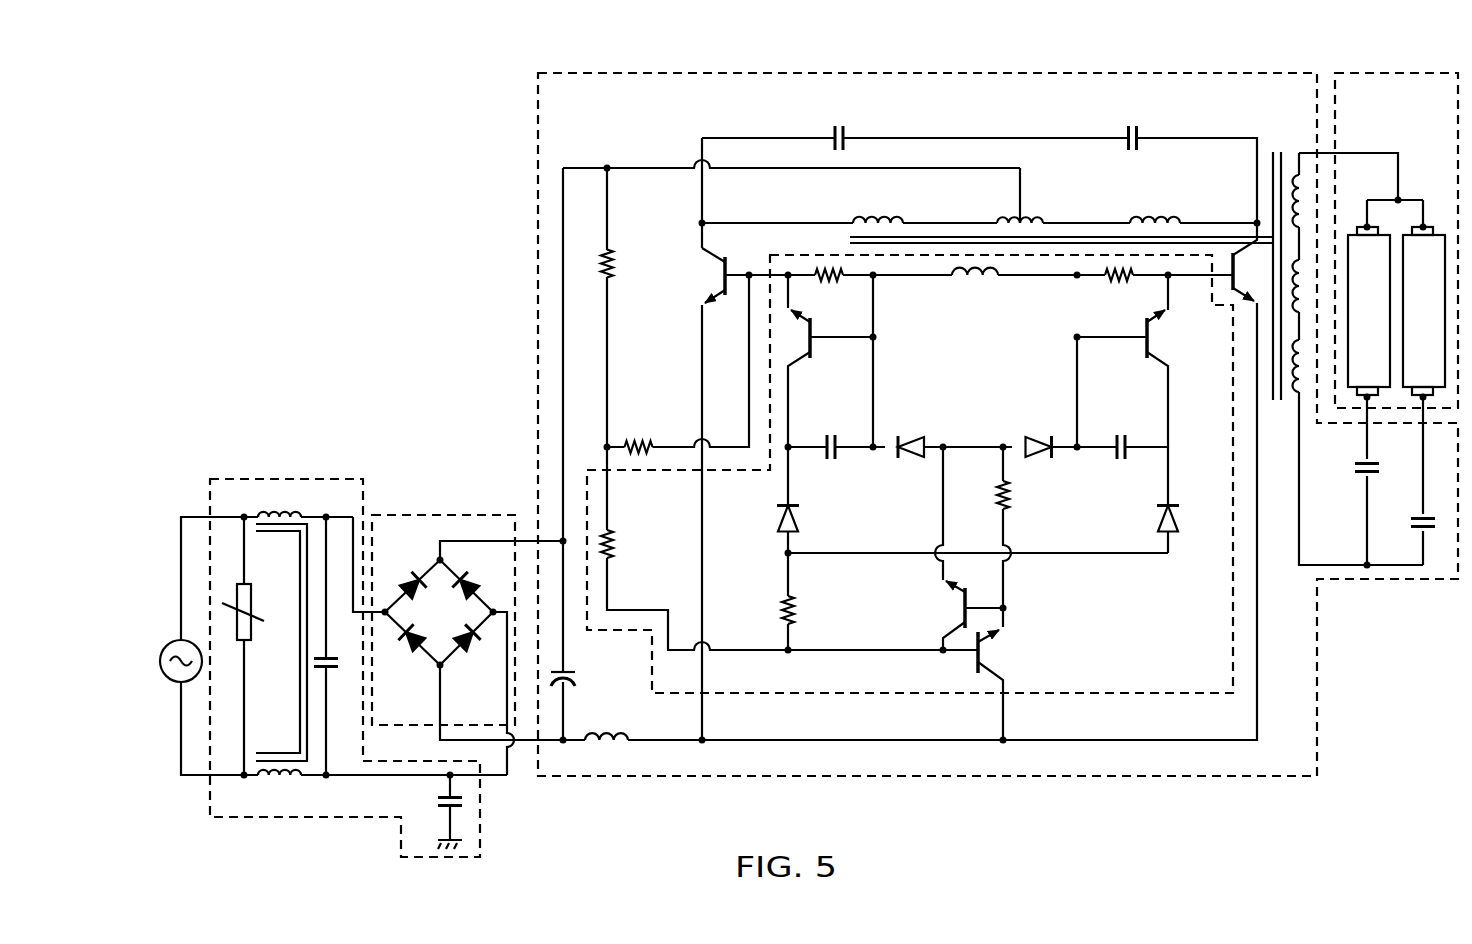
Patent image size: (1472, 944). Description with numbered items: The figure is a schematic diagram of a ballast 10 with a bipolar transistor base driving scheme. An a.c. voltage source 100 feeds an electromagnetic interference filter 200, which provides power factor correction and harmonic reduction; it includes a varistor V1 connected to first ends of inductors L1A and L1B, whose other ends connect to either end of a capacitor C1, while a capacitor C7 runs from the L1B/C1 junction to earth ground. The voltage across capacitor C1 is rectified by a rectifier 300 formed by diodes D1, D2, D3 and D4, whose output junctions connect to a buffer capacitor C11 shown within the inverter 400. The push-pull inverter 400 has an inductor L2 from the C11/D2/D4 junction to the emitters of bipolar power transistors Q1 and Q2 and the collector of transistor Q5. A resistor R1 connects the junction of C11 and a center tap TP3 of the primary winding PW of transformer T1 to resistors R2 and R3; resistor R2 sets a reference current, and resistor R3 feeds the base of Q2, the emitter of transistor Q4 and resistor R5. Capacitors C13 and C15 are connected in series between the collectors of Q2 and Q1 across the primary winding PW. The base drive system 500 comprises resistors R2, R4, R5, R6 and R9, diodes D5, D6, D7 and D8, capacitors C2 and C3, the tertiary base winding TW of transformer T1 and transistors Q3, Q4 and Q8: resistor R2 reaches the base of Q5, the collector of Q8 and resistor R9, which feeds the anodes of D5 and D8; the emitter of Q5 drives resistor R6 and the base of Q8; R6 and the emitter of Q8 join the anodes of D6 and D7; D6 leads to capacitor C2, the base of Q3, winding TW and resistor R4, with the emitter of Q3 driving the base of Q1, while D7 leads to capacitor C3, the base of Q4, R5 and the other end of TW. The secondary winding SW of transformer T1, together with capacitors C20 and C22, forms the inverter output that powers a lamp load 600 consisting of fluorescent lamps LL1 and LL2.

The ballast 10 is at (333, 323).
The a.c. voltage source 100 is at (160, 643).
The electromagnetic interference (EMI) filter 200 is at (260, 472).
The rectifier 300 is at (461, 511).
The inverter 400 is at (532, 292).
The base drive system 500 is at (1142, 702).
The lamp load 600 is at (1436, 66).
The inductor L1A is at (285, 620).
The inductor L1B is at (285, 791).
The varistor V1 is at (249, 646).
The capacitor C1 is at (330, 646).
The capacitor C7 is at (432, 811).
The diode D1 is at (407, 574).
The diode D2 is at (408, 652).
The diode D3 is at (473, 574).
The diode D4 is at (473, 652).
The resistor R1 is at (619, 265).
The resistor R2 is at (619, 545).
The resistor R3 is at (639, 430).
The buffer capacitor C11 is at (580, 678).
The inductor L2 is at (606, 753).
The capacitor C13 is at (838, 120).
The capacitor C15 is at (1130, 121).
The bipolar NPN transistor Q1 is at (1250, 262).
The bipolar NPN transistor Q2 is at (706, 275).
The transformer T1 is at (1050, 251).
The primary winding PW is at (1156, 216).
The center tap TP3 is at (1029, 217).
The secondary winding SW is at (1293, 168).
The resistor R4 is at (1119, 292).
The resistor R5 is at (829, 292).
The tertiary winding TW is at (974, 287).
The bipolar NPN transistor Q3 is at (1128, 361).
The bipolar NPN transistor Q4 is at (823, 361).
The capacitor C3 is at (832, 430).
The capacitor C2 is at (1123, 429).
The diode D5 is at (1150, 527).
The diode D6 is at (1039, 427).
The diode D7 is at (911, 427).
The diode D8 is at (773, 521).
The resistor R6 is at (1013, 497).
The resistor R9 is at (776, 622).
The NPN transistor Q5 is at (976, 674).
The NPN transistor Q8 is at (965, 615).
The fluorescent lamp LL1 is at (1369, 314).
The fluorescent lamp LL2 is at (1424, 314).
The capacitor C20 is at (1349, 480).
The capacitor C22 is at (1404, 480).